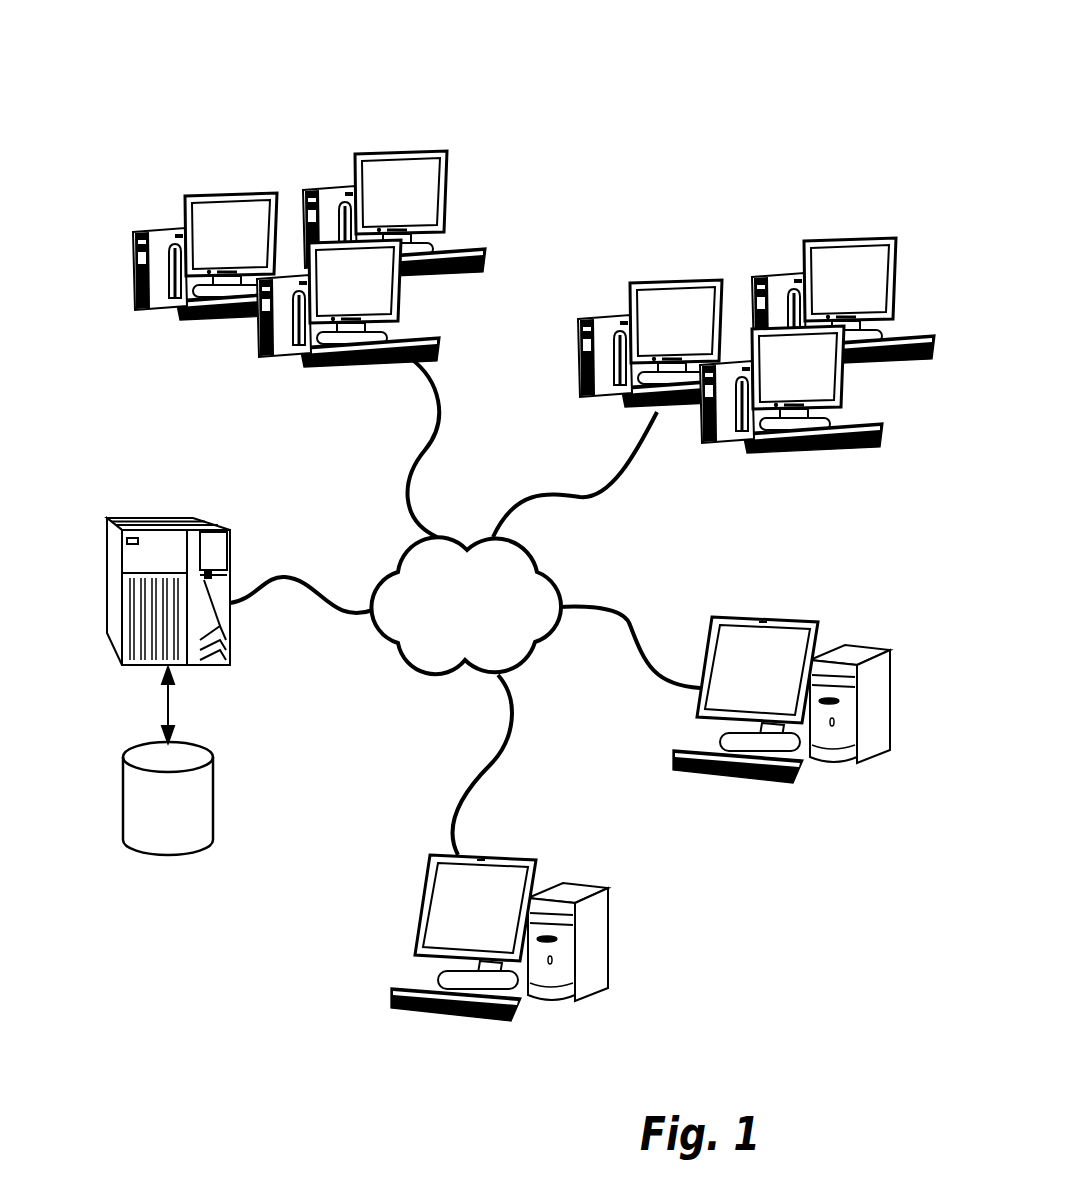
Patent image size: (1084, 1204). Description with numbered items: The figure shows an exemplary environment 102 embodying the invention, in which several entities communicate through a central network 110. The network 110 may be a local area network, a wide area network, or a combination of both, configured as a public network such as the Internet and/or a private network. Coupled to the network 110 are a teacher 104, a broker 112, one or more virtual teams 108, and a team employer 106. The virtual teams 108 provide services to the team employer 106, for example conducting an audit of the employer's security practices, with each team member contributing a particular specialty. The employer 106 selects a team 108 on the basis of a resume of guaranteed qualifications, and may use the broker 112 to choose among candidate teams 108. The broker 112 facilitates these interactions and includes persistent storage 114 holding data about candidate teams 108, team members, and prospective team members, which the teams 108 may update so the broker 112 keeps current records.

The environment 102 is at (355, 62).
The teacher 104 is at (750, 617).
The team employer 106 is at (610, 940).
The virtual teams 108 is at (443, 172).
The network 110 is at (412, 665).
The broker 112 is at (107, 578).
The persistent storage 114 is at (123, 800).